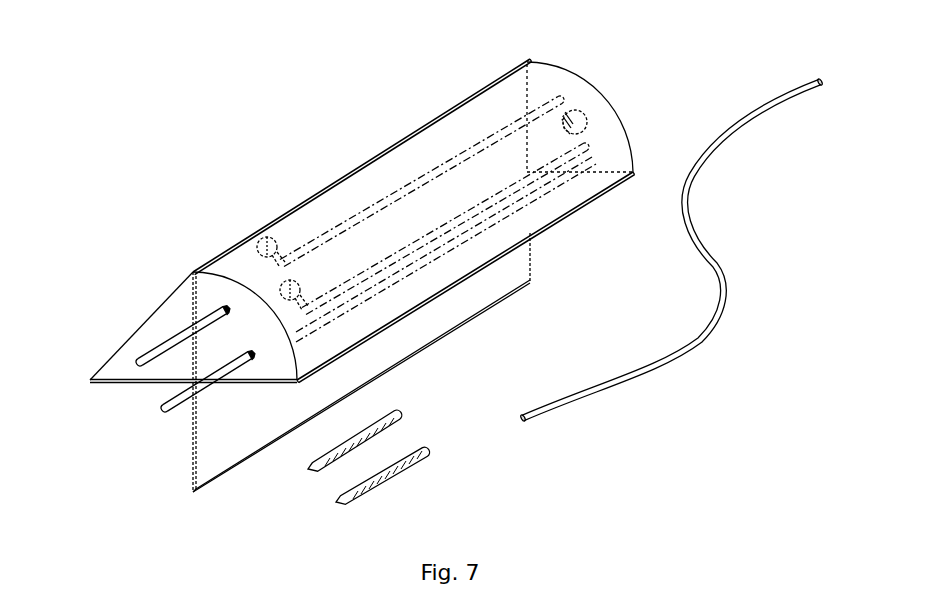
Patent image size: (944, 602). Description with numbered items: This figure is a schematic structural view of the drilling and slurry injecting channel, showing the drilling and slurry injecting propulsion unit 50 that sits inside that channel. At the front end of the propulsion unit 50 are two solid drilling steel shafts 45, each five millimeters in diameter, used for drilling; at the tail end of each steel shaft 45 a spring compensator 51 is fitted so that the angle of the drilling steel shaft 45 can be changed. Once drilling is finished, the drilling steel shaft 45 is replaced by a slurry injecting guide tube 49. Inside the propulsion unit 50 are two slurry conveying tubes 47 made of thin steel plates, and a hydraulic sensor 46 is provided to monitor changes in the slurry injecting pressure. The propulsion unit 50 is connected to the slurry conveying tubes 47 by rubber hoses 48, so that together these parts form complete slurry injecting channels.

The drilling steel shaft 45 is at (165, 408).
The hydraulic sensor 46 is at (266, 240).
The slurry conveying tube 47 is at (352, 223).
The rubber hose 48 is at (708, 258).
The slurry injecting guide tube 49 is at (343, 502).
The drilling and slurry injecting propulsion unit 50 is at (273, 360).
The spring compensator 51 is at (215, 309).